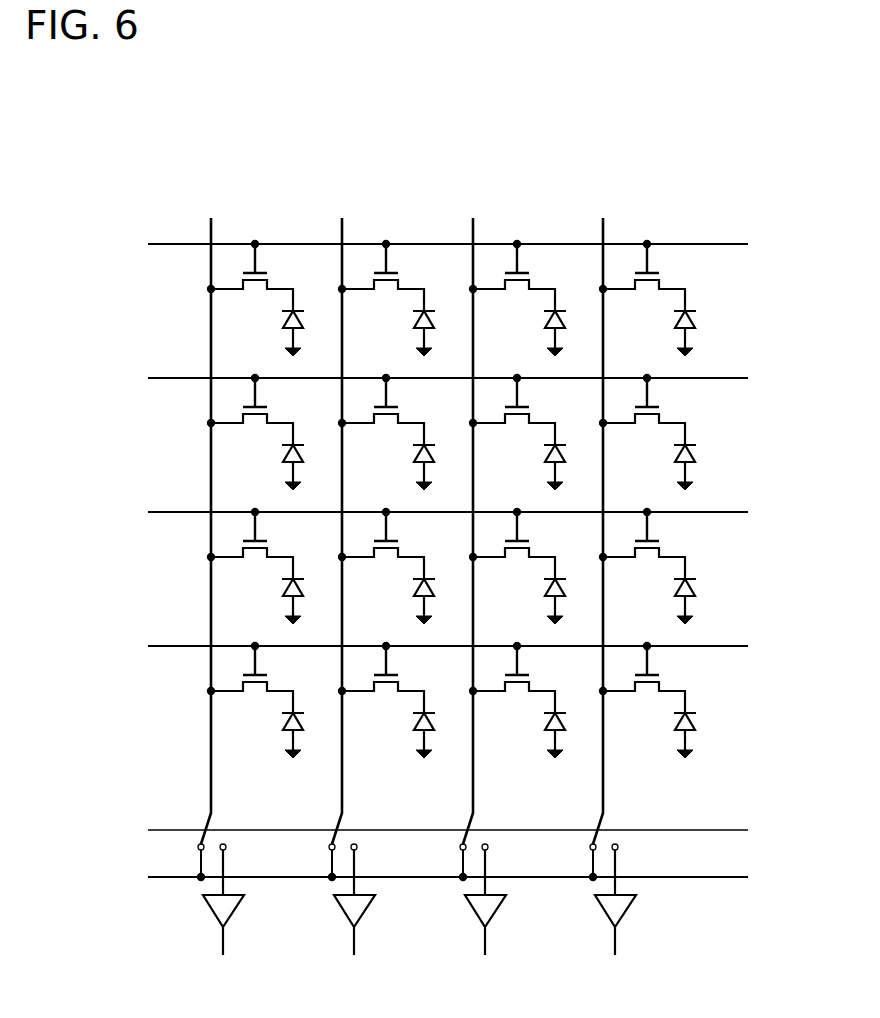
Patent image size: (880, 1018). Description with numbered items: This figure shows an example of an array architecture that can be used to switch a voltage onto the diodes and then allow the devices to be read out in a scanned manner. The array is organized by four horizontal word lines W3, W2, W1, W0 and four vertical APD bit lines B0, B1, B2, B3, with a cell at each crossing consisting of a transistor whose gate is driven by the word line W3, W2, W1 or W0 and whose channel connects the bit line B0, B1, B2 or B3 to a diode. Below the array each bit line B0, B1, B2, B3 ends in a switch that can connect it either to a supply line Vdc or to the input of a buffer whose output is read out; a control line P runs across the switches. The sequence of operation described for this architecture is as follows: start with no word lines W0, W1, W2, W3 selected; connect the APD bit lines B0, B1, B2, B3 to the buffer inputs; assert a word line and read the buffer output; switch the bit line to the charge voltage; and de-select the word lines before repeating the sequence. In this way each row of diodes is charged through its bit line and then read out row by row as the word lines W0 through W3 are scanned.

The word line W3 is at (429, 244).
The word line W2 is at (429, 378).
The word line W1 is at (429, 512).
The word line W0 is at (429, 646).
The precharge control line P is at (440, 831).
The supply voltage line Vdc is at (427, 878).
The APD bit line B0 is at (221, 605).
The APD bit line B1 is at (352, 605).
The APD bit line B2 is at (483, 605).
The APD bit line B3 is at (613, 605).